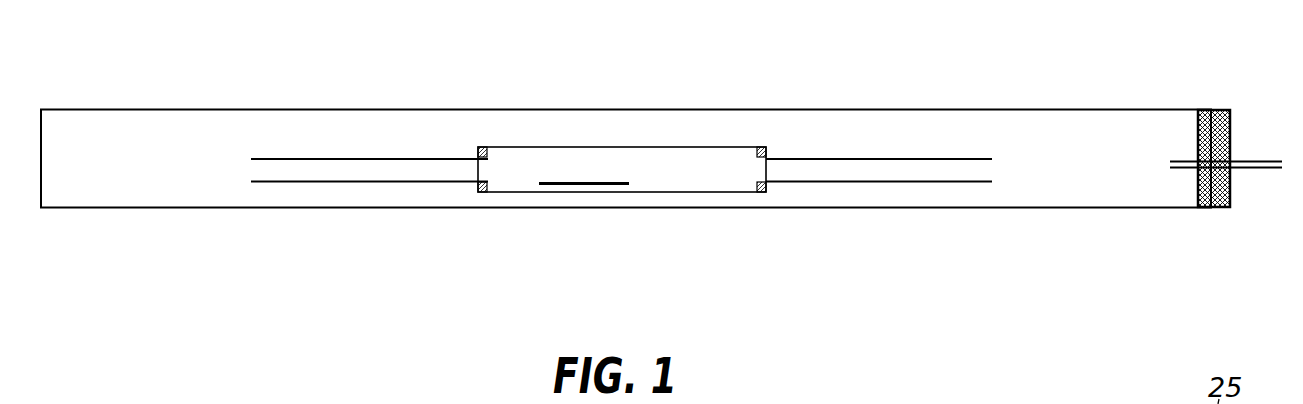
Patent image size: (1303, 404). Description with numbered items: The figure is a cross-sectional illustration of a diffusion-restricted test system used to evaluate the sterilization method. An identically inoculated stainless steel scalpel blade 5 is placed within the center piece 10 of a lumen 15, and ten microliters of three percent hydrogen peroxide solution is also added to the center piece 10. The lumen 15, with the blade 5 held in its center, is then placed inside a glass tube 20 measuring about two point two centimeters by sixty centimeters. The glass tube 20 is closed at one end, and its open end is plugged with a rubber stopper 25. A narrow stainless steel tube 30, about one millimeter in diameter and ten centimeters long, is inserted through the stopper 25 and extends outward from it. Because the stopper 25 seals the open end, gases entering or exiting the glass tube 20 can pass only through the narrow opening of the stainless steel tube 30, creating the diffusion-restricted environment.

The scalpel blade 5 is at (565, 182).
The center piece 10 is at (708, 147).
The lumen 15 is at (325, 158).
The glass tube 20 is at (160, 208).
The rubber stopper 25 is at (1222, 110).
The stainless steel tube 30 is at (1268, 168).